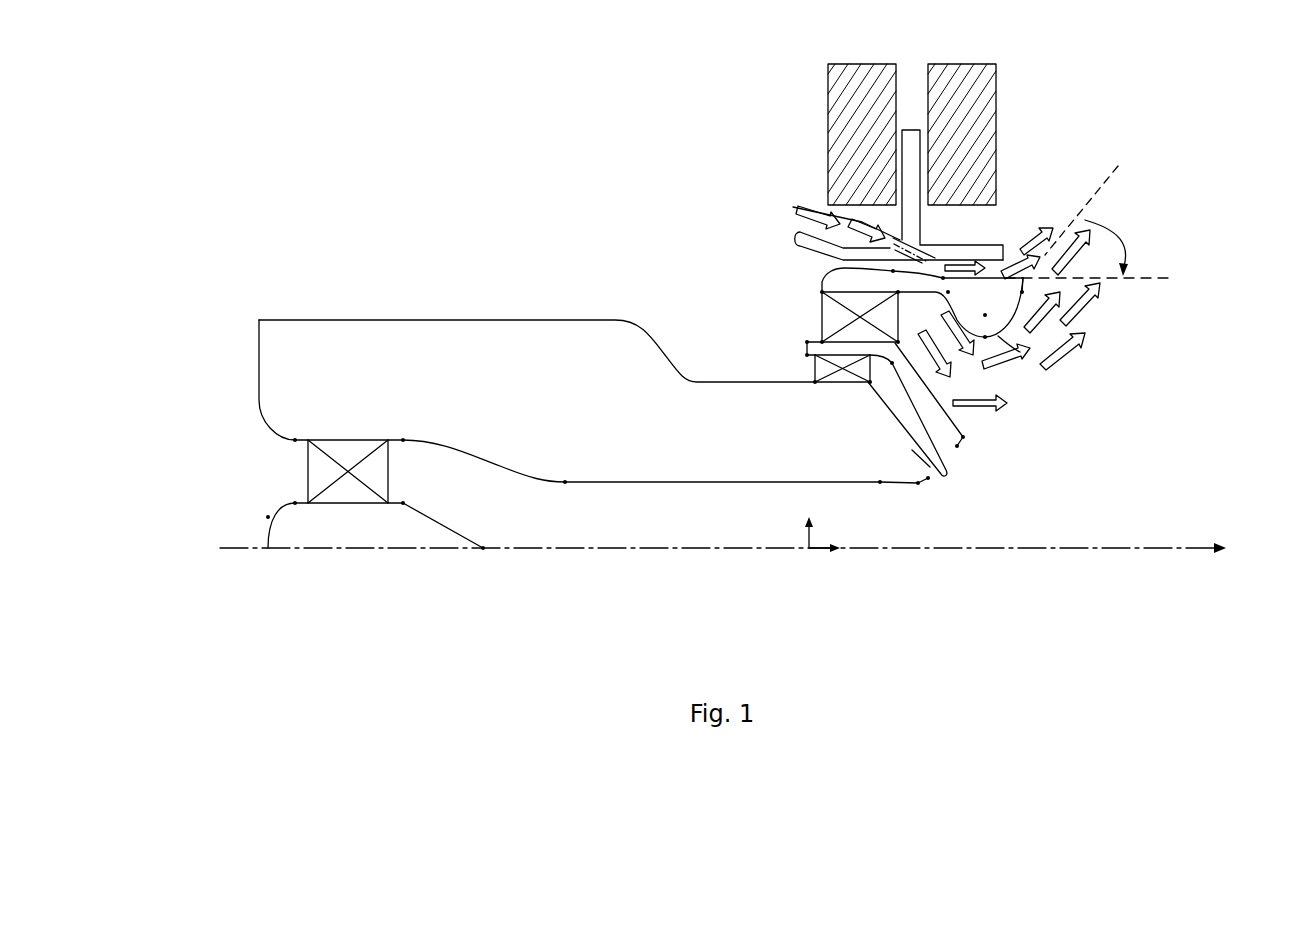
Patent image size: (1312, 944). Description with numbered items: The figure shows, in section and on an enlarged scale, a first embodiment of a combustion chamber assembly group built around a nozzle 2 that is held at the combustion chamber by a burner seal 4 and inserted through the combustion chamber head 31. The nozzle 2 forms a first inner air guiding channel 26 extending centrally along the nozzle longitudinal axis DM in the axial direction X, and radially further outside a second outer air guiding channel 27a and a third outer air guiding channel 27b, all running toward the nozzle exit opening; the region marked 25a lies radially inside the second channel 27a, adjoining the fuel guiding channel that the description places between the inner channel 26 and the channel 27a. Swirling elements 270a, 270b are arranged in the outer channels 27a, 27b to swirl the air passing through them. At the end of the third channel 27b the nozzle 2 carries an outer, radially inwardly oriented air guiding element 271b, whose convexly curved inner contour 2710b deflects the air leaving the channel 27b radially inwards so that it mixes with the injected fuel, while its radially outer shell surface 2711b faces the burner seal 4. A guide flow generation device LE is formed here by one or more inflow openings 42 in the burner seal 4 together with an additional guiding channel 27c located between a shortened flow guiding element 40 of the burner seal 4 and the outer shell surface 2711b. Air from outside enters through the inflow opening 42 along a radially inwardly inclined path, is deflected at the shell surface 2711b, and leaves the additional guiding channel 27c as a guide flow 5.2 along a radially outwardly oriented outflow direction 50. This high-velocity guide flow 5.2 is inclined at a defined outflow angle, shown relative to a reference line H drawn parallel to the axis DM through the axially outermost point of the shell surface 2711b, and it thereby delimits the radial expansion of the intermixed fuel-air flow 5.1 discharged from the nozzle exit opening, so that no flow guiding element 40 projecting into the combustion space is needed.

The nozzle 2 is at (455, 305).
The burner seal 4 is at (799, 226).
The first inner air guiding channel 26 is at (505, 530).
The platform 25a is at (913, 470).
The second outer air guiding channel 27a is at (948, 441).
The third outer air guiding channel 27b is at (956, 387).
The additional guiding channel 27c is at (825, 270).
The combustion chamber head 31 is at (852, 133).
The shortened flow guiding element 40 is at (980, 256).
The inflow opening 42 is at (907, 240).
The outflow direction 50 is at (1119, 163).
The swirling element 270a is at (823, 367).
The swirling element 270b is at (823, 308).
The air guiding element 271b is at (1002, 323).
The inner contour 2710b is at (1020, 352).
The radially outer shell surface 2711b is at (993, 278).
The intermixed flow 5.1 is at (1093, 339).
The guide flow 5.2 is at (1056, 214).
The guide flow generation device LE is at (1090, 217).
The reference line H is at (1168, 278).
The axial direction X is at (733, 539).
The nozzle longitudinal axis DM is at (1103, 553).